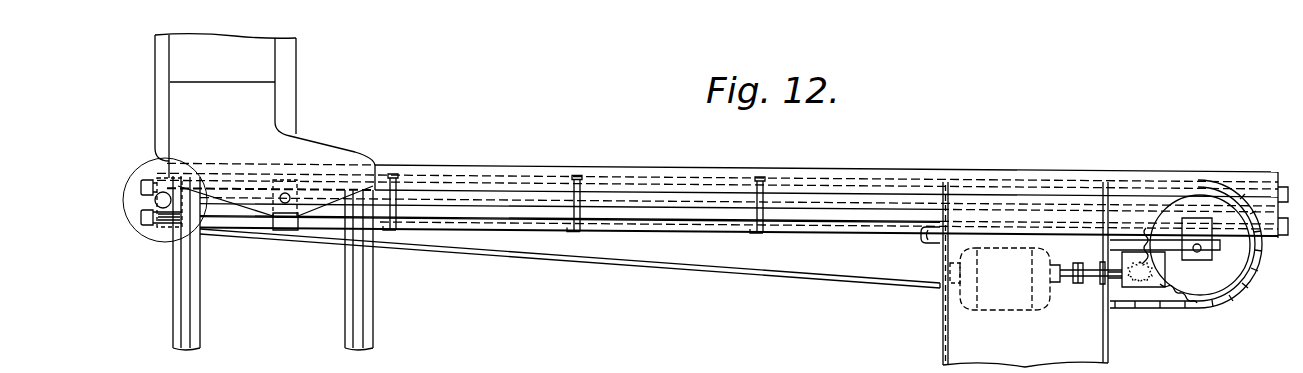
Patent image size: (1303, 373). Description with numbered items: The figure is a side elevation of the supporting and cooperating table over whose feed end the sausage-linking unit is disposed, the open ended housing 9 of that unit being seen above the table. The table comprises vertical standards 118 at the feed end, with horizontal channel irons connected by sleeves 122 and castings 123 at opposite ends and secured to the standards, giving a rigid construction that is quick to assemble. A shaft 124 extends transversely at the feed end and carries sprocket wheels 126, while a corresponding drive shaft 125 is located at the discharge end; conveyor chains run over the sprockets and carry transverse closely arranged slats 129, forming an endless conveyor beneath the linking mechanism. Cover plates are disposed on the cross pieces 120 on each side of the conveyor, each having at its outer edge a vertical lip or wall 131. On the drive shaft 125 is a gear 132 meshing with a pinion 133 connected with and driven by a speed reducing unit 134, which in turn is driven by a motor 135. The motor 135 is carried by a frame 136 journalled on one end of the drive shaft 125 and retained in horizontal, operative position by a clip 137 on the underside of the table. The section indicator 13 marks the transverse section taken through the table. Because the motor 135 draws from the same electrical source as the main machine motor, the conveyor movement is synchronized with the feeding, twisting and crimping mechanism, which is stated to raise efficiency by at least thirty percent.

The housing 9 is at (265, 112).
The section line 13- 13 is at (889, 125).
The standards 118 is at (190, 306).
The cross pieces 120 is at (583, 214).
The sleeves 122 is at (687, 223).
The castings 123 is at (163, 222).
The shaft 124 is at (156, 203).
The drive shaft 125 is at (1192, 254).
The sprocket wheels 126 is at (132, 182).
The slats 129 is at (1223, 304).
The vertical lip or wall 131 is at (706, 158).
The gear 132 is at (1175, 294).
The pinion 133 is at (1133, 274).
The speed reducing unit 134 is at (1158, 268).
The motor 135 is at (995, 305).
The frame 136 is at (1167, 240).
The clip 137 is at (923, 236).